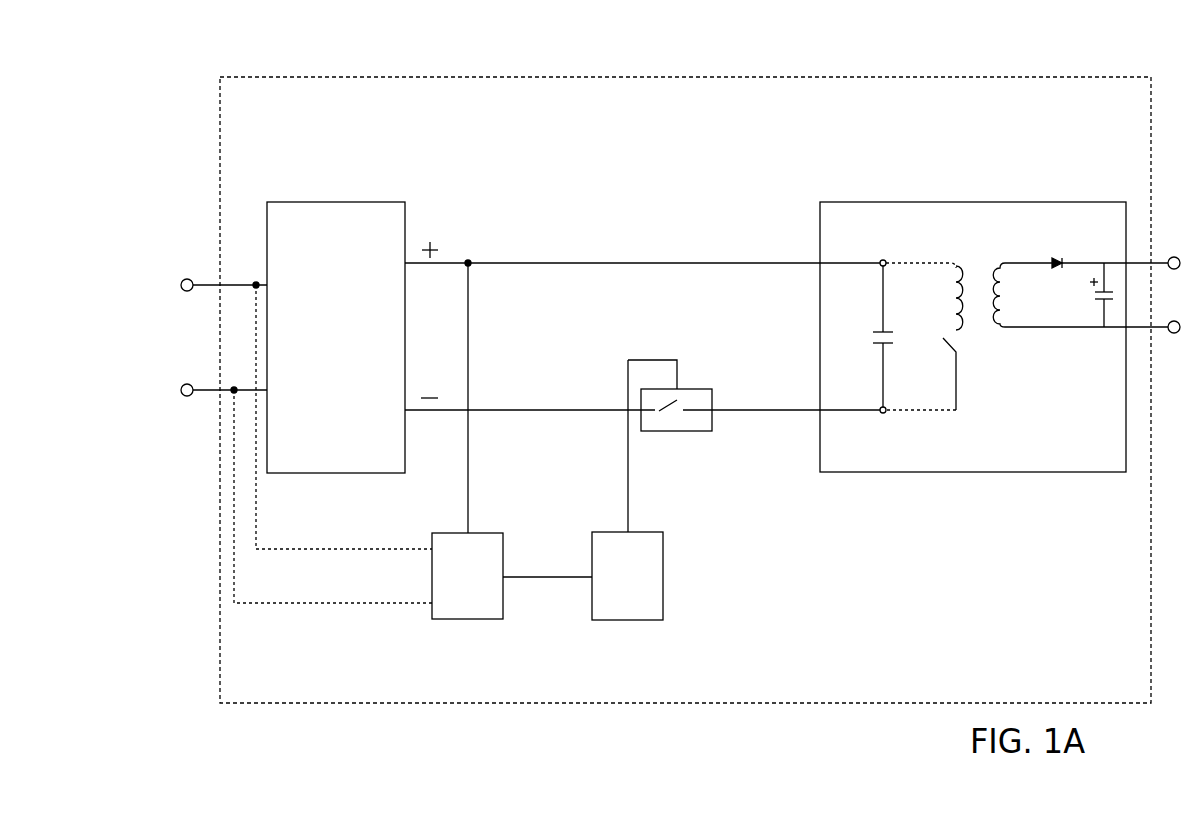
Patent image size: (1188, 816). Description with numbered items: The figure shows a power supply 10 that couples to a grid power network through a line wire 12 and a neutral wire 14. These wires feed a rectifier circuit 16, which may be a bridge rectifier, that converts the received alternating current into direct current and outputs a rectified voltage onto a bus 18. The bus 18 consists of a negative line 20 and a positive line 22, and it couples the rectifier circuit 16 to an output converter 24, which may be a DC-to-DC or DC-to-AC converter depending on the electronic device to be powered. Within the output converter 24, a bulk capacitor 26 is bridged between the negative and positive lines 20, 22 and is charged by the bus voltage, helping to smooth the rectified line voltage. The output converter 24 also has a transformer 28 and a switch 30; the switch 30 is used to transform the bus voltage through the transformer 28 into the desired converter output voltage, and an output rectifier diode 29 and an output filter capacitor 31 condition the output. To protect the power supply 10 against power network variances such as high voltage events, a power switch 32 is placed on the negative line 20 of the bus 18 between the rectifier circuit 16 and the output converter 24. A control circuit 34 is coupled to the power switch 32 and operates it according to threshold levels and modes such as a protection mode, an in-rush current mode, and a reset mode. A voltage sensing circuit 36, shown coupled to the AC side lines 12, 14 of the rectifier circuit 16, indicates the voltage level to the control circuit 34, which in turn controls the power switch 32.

The power supply 10 is at (663, 52).
The line wire 12 is at (203, 281).
The neutral wire 14 is at (203, 386).
The rectifier circuit 16 is at (405, 202).
The bus 18 is at (493, 225).
The negative line 20 is at (528, 410).
The positive line 22 is at (525, 263).
The output converter 24 is at (905, 202).
The bulk capacitor 26 is at (878, 331).
The transformer 28 is at (954, 292).
The output rectifier diode 29 is at (1056, 260).
The switch 30 is at (946, 344).
The output filter capacitor 31 is at (1098, 300).
The power switch 32 is at (700, 389).
The control circuit 34 is at (655, 532).
The voltage sensing circuit 36 is at (498, 533).